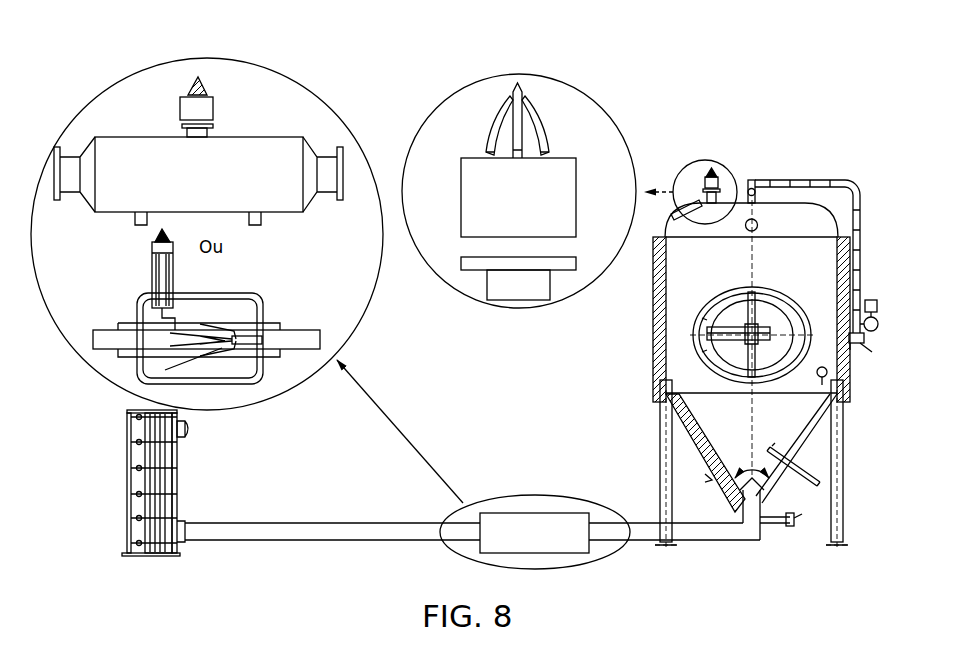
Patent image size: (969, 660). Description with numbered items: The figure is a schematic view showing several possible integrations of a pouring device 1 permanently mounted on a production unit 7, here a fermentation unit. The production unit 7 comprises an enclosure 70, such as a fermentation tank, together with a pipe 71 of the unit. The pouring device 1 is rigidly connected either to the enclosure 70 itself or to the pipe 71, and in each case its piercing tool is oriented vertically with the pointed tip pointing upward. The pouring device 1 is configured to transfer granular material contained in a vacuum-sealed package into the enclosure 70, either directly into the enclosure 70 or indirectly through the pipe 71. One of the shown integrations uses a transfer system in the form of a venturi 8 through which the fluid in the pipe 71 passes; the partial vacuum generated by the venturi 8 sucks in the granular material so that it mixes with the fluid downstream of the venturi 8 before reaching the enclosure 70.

The pouring device 1 is at (209, 78).
The production unit 7 is at (810, 83).
The venturi 8 is at (254, 293).
The enclosure 70 is at (687, 320).
The pipe 71 is at (315, 533).